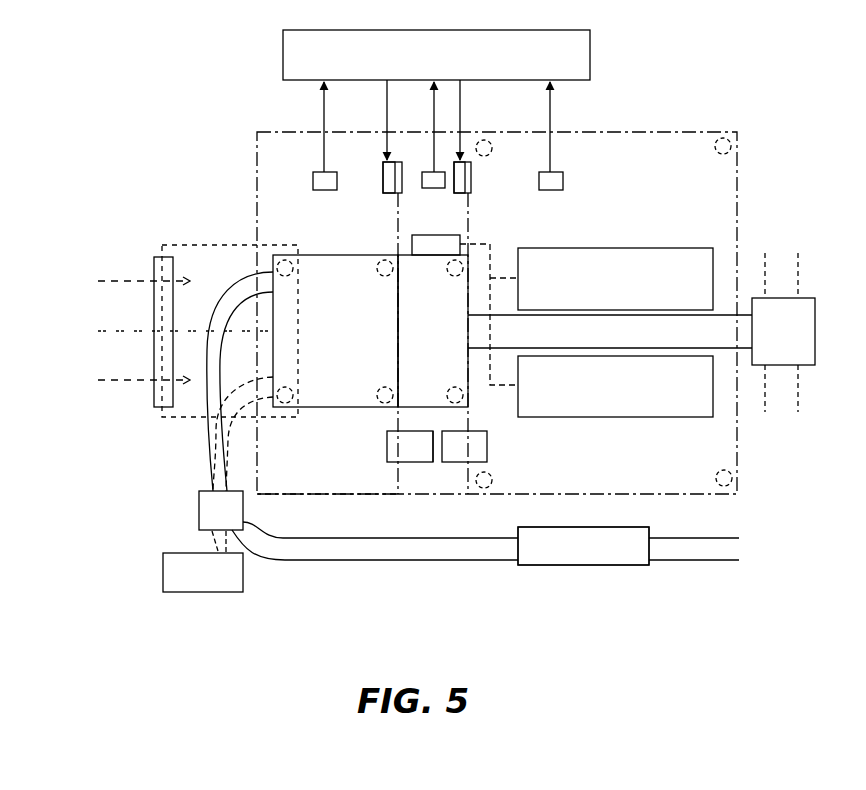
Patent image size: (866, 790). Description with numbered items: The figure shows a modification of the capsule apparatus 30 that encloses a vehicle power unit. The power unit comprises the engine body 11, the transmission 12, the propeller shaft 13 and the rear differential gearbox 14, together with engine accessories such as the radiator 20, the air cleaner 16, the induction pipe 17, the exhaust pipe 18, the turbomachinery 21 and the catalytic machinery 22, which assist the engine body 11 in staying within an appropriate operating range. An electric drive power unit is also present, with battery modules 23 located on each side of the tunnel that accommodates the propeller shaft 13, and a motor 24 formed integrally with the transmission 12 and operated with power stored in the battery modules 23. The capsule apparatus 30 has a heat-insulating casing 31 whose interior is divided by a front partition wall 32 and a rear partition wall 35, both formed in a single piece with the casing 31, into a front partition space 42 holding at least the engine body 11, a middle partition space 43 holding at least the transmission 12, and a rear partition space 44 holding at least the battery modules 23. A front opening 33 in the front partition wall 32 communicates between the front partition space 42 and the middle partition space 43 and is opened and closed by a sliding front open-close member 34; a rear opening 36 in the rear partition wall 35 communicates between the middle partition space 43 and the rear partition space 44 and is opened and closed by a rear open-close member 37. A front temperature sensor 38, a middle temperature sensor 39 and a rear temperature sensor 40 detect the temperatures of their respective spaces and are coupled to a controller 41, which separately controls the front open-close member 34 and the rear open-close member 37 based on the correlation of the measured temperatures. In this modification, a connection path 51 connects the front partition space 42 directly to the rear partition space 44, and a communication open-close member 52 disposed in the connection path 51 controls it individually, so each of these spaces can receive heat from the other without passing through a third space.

The engine body 11 is at (364, 390).
The transmission 12 is at (437, 392).
The propeller shaft 13 is at (643, 340).
The rear differential gearbox 14 is at (808, 305).
The air cleaner 16 is at (175, 562).
The induction pipe 17 is at (218, 547).
The exhaust pipe 18 is at (457, 553).
The radiator 20 is at (160, 298).
The turbomachinery 21 is at (199, 500).
The catalytic machinery 22 is at (556, 545).
The battery modules 23 is at (677, 255).
The motor 24 is at (440, 243).
The capsule apparatus 30 is at (685, 95).
The casing 31 is at (627, 130).
The front partition wall 32 is at (385, 492).
The front opening 33 is at (405, 168).
The front open-close member 34 is at (387, 184).
The rear partition wall 35 is at (462, 487).
The rear opening 36 is at (472, 172).
The rear open-close member 37 is at (462, 185).
The front temperature sensor 38 is at (328, 168).
The middle temperature sensor 39 is at (440, 168).
The rear temperature sensor 40 is at (560, 165).
The controller 41 is at (571, 70).
The front partition space 42 is at (338, 478).
The middle partition space 43 is at (433, 476).
The rear partition space 44 is at (607, 478).
The connection path 51 is at (390, 452).
The communication open-close member 52 is at (448, 446).